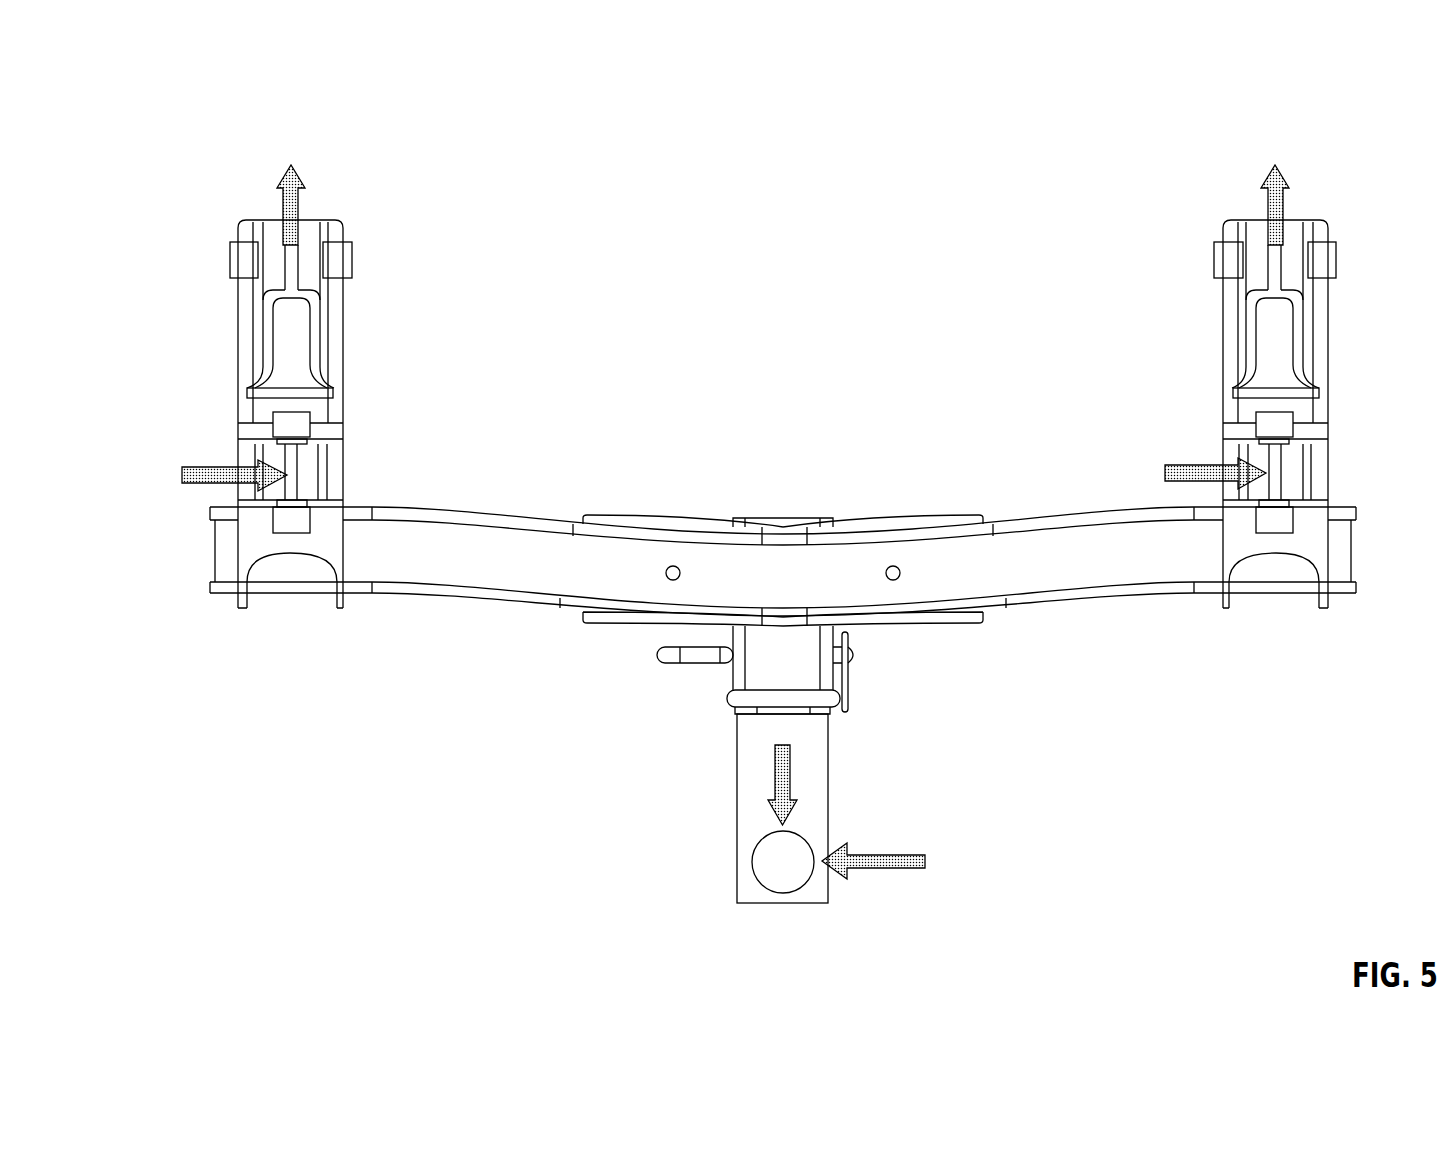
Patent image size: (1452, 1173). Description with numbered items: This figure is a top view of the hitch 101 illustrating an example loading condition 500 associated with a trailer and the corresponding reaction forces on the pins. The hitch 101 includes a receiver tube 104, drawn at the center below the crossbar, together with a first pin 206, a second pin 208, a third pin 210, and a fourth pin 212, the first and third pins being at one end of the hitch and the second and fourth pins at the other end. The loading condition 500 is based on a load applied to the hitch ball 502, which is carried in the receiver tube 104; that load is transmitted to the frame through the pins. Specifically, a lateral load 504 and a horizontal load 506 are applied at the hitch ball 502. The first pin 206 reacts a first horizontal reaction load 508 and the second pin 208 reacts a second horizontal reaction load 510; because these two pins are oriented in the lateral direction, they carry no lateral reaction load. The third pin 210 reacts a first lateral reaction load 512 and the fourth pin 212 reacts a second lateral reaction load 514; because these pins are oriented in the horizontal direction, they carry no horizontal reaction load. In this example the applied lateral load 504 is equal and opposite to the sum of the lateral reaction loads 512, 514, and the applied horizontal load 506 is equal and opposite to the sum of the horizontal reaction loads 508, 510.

The hitch 101 is at (1336, 97).
The receiver tube 104 is at (735, 711).
The first pin 206 is at (353, 258).
The second pin 208 is at (1338, 258).
The third pin 210 is at (306, 419).
The fourth pin 212 is at (1291, 419).
The loading condition 500 is at (969, 117).
The hitch ball 502 is at (758, 883).
The lateral load 504 is at (887, 854).
The horizontal load 506 is at (791, 765).
The first horizontal reaction load 508 is at (287, 172).
The second horizontal reaction load 510 is at (1272, 172).
The first lateral reaction load 512 is at (222, 466).
The second lateral reaction load 514 is at (1205, 466).